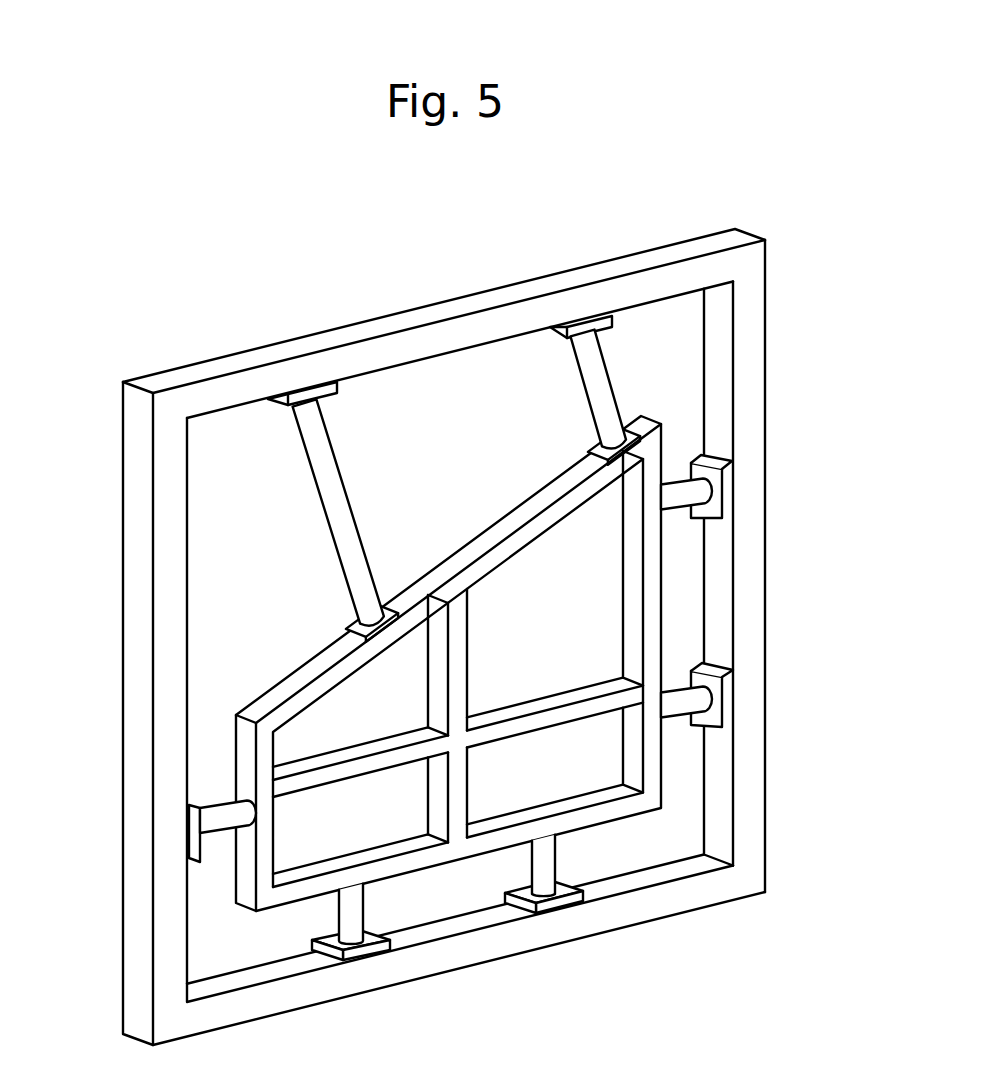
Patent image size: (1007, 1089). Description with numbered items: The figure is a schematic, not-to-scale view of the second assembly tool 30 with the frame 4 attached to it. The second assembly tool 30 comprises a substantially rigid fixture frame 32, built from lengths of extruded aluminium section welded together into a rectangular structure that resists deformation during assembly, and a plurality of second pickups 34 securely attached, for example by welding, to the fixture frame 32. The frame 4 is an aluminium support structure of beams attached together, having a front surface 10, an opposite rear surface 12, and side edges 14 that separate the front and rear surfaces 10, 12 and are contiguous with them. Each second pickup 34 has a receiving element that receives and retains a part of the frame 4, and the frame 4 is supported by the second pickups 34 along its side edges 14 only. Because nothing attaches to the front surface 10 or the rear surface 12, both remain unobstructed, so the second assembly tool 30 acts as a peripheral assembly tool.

The second assembly tool 30 is at (481, 587).
The fixture frame 32 is at (752, 388).
The second pickups 34 is at (317, 390).
The frame 4 is at (445, 718).
The side edges 14 is at (428, 580).
The front surface 10 is at (462, 664).
The rear surface 12 is at (420, 683).